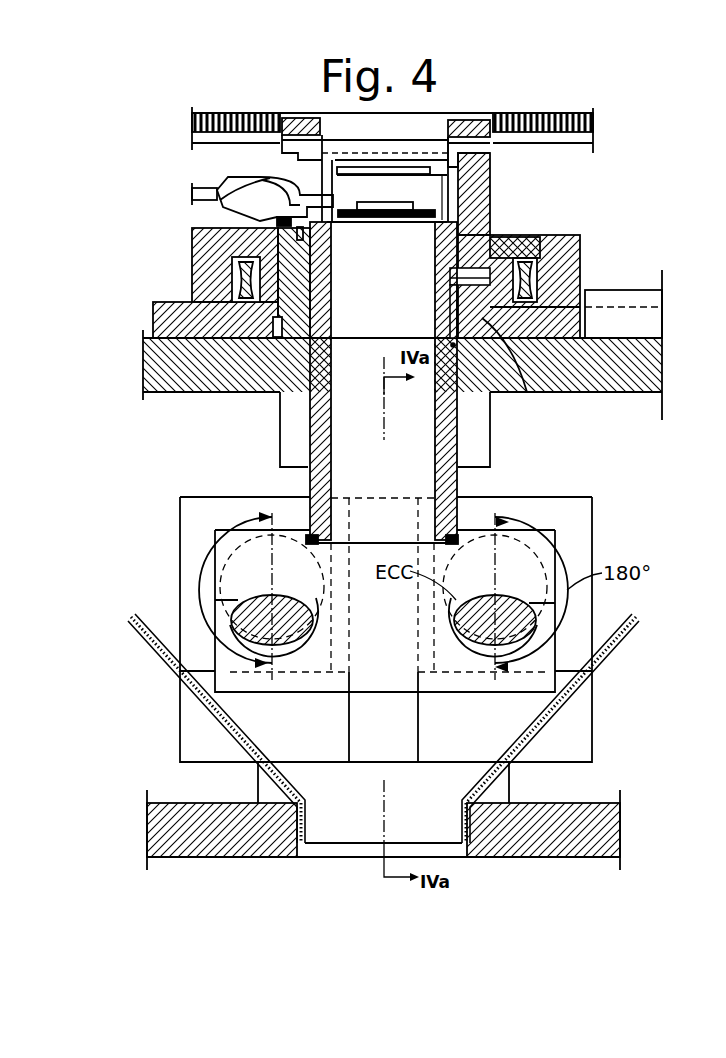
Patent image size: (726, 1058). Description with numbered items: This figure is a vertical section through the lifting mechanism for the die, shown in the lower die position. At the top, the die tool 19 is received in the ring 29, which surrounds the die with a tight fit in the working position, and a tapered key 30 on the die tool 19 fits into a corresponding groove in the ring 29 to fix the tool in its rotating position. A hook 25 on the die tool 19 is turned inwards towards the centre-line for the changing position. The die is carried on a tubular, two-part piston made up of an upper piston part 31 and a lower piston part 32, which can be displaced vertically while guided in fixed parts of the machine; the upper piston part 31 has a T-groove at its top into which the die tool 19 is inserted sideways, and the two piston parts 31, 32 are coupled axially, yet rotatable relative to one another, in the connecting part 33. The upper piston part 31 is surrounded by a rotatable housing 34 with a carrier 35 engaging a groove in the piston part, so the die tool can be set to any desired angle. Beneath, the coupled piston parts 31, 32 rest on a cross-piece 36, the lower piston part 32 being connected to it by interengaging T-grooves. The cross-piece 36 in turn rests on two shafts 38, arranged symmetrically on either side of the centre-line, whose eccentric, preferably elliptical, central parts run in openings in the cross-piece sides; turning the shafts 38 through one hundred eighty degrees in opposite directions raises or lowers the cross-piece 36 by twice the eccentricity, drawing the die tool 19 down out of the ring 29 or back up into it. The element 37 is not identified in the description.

The die tool 19 is at (492, 170).
The hook 25 is at (222, 203).
The ring 29 is at (273, 135).
The tapered key 30 is at (425, 182).
The upper piston part 31 is at (527, 233).
The lower piston part 32 is at (455, 436).
The connecting part 33 is at (490, 395).
The rotatable housing 34 is at (484, 312).
The carrier 35 is at (581, 248).
The cross-piece 36 is at (554, 541).
The eccentric housing 37 is at (474, 530).
The shafts 38 is at (592, 543).